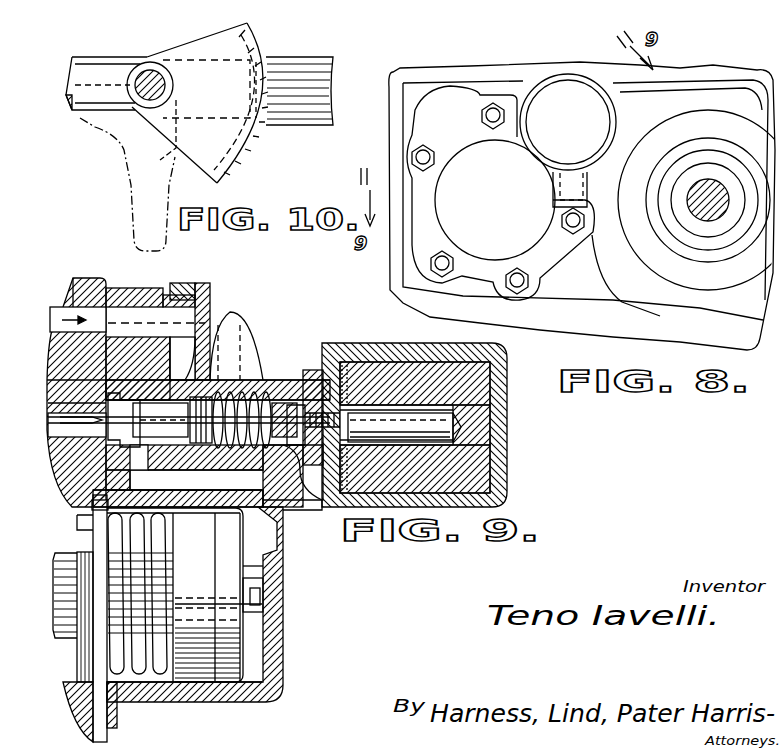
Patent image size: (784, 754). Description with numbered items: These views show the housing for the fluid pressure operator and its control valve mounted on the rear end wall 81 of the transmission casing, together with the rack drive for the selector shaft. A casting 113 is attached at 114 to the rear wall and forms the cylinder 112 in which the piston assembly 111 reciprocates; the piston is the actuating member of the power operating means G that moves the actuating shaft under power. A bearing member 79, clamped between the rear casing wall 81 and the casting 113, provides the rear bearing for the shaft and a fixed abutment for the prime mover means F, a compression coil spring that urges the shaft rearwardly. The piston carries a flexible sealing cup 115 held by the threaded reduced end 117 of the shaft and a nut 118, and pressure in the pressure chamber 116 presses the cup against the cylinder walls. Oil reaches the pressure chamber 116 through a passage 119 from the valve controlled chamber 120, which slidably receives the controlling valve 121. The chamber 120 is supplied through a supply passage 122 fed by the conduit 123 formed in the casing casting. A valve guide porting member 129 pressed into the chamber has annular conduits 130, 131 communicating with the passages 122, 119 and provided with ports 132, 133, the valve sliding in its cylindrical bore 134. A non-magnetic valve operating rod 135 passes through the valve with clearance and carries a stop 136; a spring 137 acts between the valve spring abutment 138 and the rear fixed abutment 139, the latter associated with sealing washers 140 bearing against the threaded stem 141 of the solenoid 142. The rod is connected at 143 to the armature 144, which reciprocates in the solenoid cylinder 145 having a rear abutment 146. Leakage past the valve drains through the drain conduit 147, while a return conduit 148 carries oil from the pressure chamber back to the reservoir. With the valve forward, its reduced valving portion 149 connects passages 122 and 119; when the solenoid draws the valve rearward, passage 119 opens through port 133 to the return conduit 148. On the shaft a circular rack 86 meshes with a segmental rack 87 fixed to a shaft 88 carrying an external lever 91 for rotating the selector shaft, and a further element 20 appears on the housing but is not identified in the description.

In FIG. 8, the drive shaft 20 is at (713, 185).
In FIG. 9, the bearing member 79 is at (90, 522).
In FIG. 8, the rear end wall 81 is at (553, 330).
In FIG. 10, the circular rack 86 is at (306, 62).
In FIG. 9, the circular rack 86 is at (56, 596).
In FIG. 10, the segmental rack 87 is at (262, 45).
In FIG. 10, the shaft 88 is at (173, 88).
In FIG. 10, the lever 91 is at (150, 178).
In FIG. 9, the piston assembly 111 is at (210, 637).
In FIG. 9, the cylinder 112 is at (178, 705).
In FIG. 8, the casting 113 is at (520, 245).
In FIG. 9, the casting 113 is at (272, 380).
In FIG. 8, the attachment fasteners 114 is at (460, 118).
In FIG. 9, the flexible sealing cup 115 is at (262, 672).
In FIG. 9, the pressure chamber 116 is at (255, 655).
In FIG. 9, the threaded reduced end 117 is at (262, 592).
In FIG. 9, the nut 118 is at (262, 610).
In FIG. 9, the passage 119 is at (286, 525).
In FIG. 9, the valve controlled chamber 120 is at (100, 455).
In FIG. 9, the controlling valve 121 is at (90, 419).
In FIG. 9, the supply passage 122 is at (205, 302).
In FIG. 9, the conduit 123 is at (74, 282).
In FIG. 9, the valve guide porting member 129 is at (112, 407).
In FIG. 9, the annular conduit 130 is at (139, 351).
In FIG. 9, the annular conduit 131 is at (60, 380).
In FIG. 9, the port 132 is at (182, 440).
In FIG. 9, the port 133 is at (100, 500).
In FIG. 9, the cylindrical bore 134 is at (140, 465).
In FIG. 9, the valve operating rod 135 is at (250, 378).
In FIG. 9, the stop 136 is at (77, 426).
In FIG. 9, the spring 137 is at (243, 448).
In FIG. 9, the valve spring abutment 138 is at (210, 443).
In FIG. 9, the rear fixed abutment 139 is at (308, 372).
In FIG. 9, the sealing washers 140 is at (415, 383).
In FIG. 9, the threaded stem 141 is at (415, 469).
In FIG. 9, the solenoid 142 is at (507, 497).
In FIG. 9, the connection 143 is at (404, 427).
In FIG. 9, the armature 144 is at (400, 423).
In FIG. 9, the solenoid cylinder 145 is at (470, 405).
In FIG. 9, the rear abutment 146 is at (495, 430).
In FIG. 8, the drain conduit 147 is at (463, 198).
In FIG. 9, the drain conduit 147 is at (250, 318).
In FIG. 9, the return conduit 148 is at (75, 445).
In FIG. 9, the reduced valving portion 149 is at (172, 358).
In FIG. 9, the prime mover means F is at (164, 537).
In FIG. 9, the power operating means G is at (254, 564).